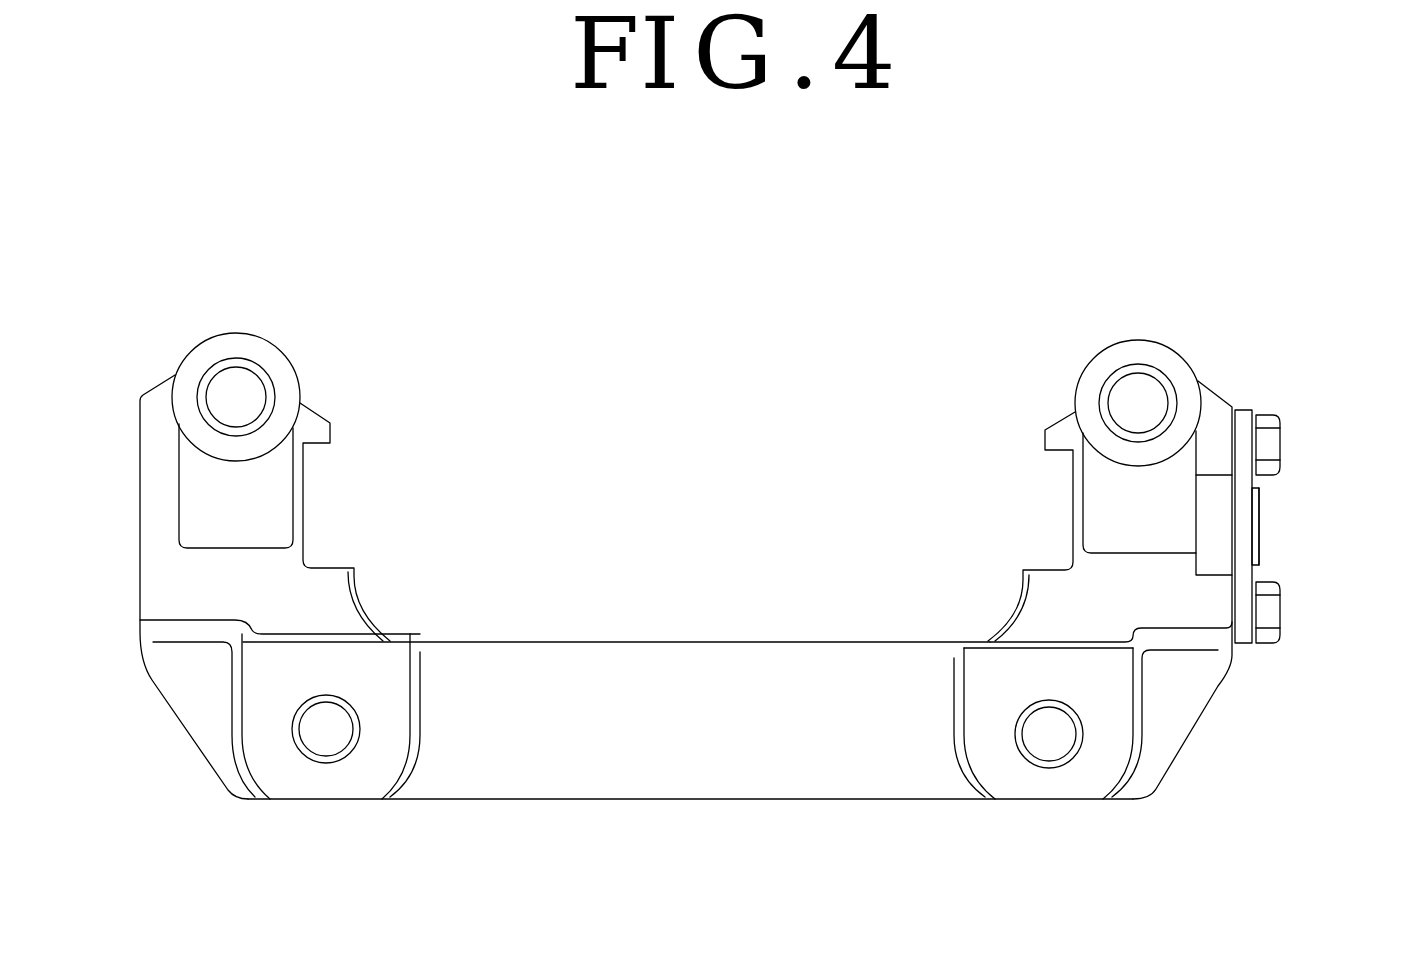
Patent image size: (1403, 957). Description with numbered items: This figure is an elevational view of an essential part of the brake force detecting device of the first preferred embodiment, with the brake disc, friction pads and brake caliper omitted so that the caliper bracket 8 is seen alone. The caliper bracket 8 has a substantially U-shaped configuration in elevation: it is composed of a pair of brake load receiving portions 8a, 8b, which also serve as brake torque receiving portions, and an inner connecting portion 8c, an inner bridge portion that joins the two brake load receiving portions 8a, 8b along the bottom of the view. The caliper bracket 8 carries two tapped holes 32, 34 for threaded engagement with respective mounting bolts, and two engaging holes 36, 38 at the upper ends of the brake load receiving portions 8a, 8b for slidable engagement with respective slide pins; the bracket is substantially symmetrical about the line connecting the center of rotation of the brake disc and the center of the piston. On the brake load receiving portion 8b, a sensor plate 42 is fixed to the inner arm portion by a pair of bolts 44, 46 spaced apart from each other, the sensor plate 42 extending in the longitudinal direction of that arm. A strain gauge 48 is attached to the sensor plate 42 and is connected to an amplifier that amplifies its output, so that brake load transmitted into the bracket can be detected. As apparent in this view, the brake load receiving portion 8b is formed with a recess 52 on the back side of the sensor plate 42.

The caliper bracket 8 is at (676, 638).
The brake load receiving portion 8a is at (302, 500).
The brake load receiving portion 8b is at (1073, 497).
The inner connecting portion 8c is at (671, 801).
The tapped hole 32 is at (325, 748).
The tapped hole 34 is at (1049, 752).
The engaging hole 36 is at (236, 334).
The engaging hole 38 is at (1139, 340).
The sensor plate 42 is at (1245, 555).
The bolt 44 is at (1272, 420).
The bolt 46 is at (1270, 636).
The strain gauge 48 is at (1262, 518).
The recess 52 is at (1226, 490).